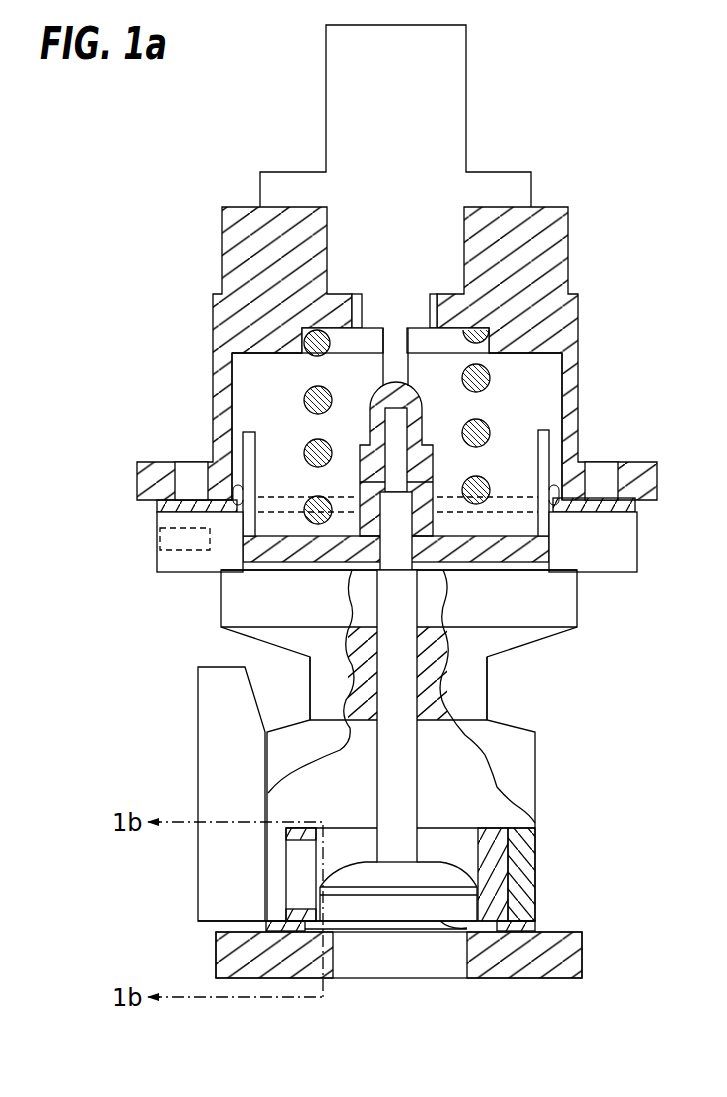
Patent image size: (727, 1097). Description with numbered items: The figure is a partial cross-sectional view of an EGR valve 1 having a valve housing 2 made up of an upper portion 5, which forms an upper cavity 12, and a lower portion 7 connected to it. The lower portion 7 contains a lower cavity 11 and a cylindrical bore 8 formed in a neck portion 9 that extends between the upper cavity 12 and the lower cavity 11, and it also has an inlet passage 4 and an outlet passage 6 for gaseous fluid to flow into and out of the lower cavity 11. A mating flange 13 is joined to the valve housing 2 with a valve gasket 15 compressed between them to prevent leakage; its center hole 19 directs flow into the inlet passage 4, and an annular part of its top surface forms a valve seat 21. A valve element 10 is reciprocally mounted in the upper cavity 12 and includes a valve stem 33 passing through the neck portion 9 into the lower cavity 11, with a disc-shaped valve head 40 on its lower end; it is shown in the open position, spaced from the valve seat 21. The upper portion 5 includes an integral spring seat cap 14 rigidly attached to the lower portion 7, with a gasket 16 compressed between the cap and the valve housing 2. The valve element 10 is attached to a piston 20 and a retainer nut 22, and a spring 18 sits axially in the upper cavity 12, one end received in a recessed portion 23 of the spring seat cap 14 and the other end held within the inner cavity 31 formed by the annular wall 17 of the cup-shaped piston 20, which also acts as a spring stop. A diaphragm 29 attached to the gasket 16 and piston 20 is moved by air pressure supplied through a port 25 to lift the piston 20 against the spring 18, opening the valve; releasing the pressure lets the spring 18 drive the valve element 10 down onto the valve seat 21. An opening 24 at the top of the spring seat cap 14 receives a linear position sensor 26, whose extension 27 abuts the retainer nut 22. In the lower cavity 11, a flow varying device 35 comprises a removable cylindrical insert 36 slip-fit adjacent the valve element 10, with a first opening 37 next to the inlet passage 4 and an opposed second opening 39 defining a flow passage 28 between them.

The EGR valve 1 is at (85, 490).
The valve housing 2 is at (558, 725).
The inlet passage 4 is at (383, 926).
The upper portion 5 is at (203, 268).
The outlet passage 6 is at (198, 762).
The lower portion 7 is at (160, 870).
The cylindrical bore 8 is at (430, 665).
The neck portion 9 is at (320, 677).
The valve element 10 is at (420, 645).
The lower cavity 11 is at (460, 773).
The upper cavity 12 is at (540, 376).
The mating flange 13 is at (562, 978).
The integral spring seat cap 14 is at (572, 265).
The valve gasket 15 is at (540, 926).
The gasket 16 is at (640, 505).
The annular wall 17 is at (235, 445).
The spring 18 is at (290, 452).
The center hole 19 is at (467, 953).
The piston 20 is at (553, 550).
The valve seat 21 is at (483, 917).
The retainer nut 22 is at (430, 406).
The recessed portion 23 is at (490, 337).
The opening 24 is at (548, 293).
The port 25 is at (168, 540).
The linear position sensor 26 is at (520, 96).
The extension 27 is at (380, 369).
The flow passage 28 is at (397, 912).
The diaphragm 29 is at (240, 537).
The inner cavity 31 is at (518, 530).
The valve stem 33 is at (427, 682).
The flow varying device 35 is at (515, 905).
The insert 36 is at (460, 868).
The first opening 37 is at (360, 912).
The second opening 39 is at (345, 838).
The valve head 40 is at (483, 850).